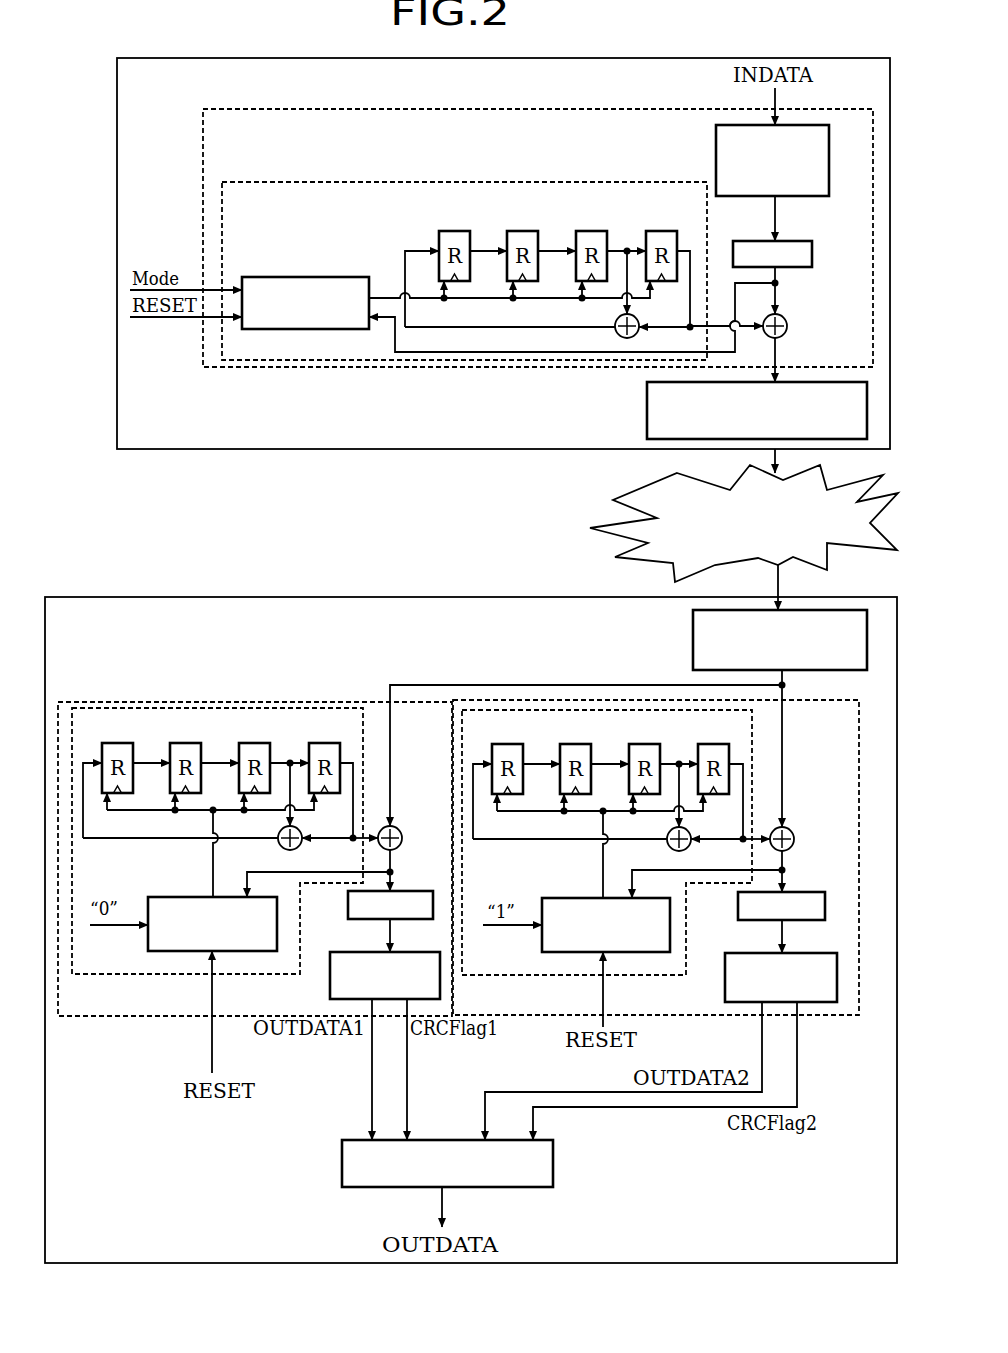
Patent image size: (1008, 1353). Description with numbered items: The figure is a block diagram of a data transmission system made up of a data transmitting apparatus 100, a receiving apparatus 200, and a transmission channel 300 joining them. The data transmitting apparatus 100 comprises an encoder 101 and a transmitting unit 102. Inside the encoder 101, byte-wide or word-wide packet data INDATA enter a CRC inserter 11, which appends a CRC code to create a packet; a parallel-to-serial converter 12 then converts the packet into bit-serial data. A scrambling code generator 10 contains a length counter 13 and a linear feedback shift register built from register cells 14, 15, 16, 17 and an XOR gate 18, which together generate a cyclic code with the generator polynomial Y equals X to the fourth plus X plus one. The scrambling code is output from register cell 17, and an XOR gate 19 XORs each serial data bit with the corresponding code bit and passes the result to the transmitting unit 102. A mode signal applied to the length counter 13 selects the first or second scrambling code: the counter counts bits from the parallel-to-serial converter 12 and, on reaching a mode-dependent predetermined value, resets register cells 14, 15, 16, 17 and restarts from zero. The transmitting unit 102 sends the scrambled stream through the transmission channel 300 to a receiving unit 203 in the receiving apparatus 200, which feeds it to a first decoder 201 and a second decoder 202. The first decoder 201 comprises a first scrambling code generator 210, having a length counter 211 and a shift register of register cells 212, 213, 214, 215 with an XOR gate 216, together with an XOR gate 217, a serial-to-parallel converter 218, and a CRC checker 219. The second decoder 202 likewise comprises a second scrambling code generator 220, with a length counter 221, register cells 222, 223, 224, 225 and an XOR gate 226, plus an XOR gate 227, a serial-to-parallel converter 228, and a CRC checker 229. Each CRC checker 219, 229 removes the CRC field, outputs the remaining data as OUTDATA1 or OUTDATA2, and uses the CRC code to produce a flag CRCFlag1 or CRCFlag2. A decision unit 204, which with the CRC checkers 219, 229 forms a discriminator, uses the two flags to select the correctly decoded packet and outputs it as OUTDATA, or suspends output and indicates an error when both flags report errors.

The data transmitting apparatus 100 is at (117, 95).
The encoder 101 is at (525, 108).
The scrambling code generator 10 is at (537, 181).
The CRC inserter 11 is at (716, 146).
The parallel-to-serial converter 12 is at (795, 241).
The length counter 13 is at (334, 277).
The register cell 14 is at (455, 231).
The register cell 15 is at (523, 231).
The register cell 16 is at (592, 231).
The register cell 17 is at (662, 231).
The XOR gate 18 is at (638, 318).
The XOR gate 19 is at (786, 316).
The transmitting unit 102 is at (647, 410).
The transmission channel 300 is at (612, 527).
The receiving apparatus 200 is at (330, 596).
The receiving unit 203 is at (693, 636).
The first decoder 201 is at (222, 702).
The first scrambling code generator 210 is at (313, 708).
The second decoder 202 is at (533, 700).
The second scrambling code generator 220 is at (612, 710).
The length counter 211 is at (200, 897).
The register cell 212 is at (117, 743).
The register cell 213 is at (185, 743).
The register cell 214 is at (254, 743).
The register cell 215 is at (322, 743).
The XOR gate 216 is at (300, 848).
The XOR gate 217 is at (398, 828).
The serial-to-parallel converter 218 is at (400, 891).
The CRC checker 219 is at (400, 952).
The length counter 221 is at (583, 898).
The register cell 222 is at (497, 744).
The register cell 223 is at (569, 744).
The register cell 224 is at (637, 744).
The register cell 225 is at (705, 744).
The XOR gate 226 is at (691, 848).
The XOR gate 227 is at (793, 830).
The serial-to-parallel converter 228 is at (803, 892).
The CRC checker 229 is at (797, 953).
The decision unit 204 is at (342, 1163).